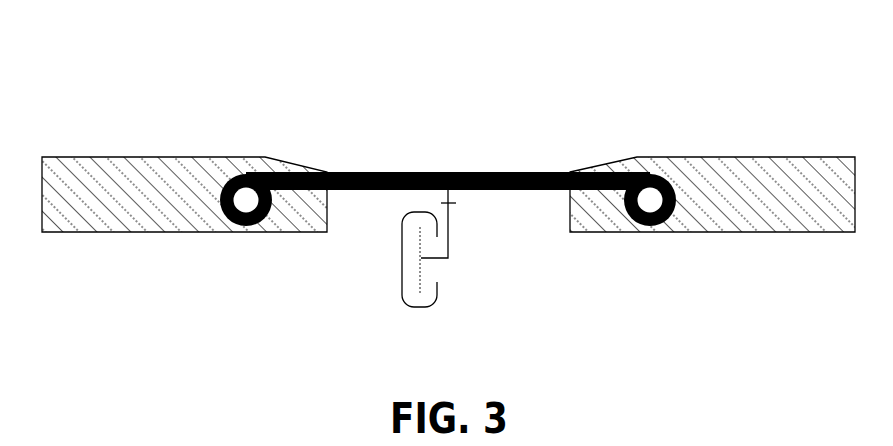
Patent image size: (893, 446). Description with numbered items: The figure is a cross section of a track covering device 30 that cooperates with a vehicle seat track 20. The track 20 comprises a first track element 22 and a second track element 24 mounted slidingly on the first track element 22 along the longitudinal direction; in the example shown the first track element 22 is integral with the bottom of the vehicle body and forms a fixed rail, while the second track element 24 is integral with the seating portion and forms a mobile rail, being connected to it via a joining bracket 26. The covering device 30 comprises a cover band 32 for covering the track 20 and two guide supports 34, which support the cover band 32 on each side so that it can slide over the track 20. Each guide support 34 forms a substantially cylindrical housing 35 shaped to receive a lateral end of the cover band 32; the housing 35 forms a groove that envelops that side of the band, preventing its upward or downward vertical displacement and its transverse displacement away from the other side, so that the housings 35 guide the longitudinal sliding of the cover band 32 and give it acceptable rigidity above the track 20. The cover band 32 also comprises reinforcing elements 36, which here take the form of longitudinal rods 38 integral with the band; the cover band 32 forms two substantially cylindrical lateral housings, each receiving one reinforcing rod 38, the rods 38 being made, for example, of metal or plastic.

The track 20 is at (425, 281).
The first track element 22 is at (400, 255).
The second track element 24 is at (450, 252).
The joining bracket 26 is at (450, 195).
The covering device 30 is at (110, 115).
The cover band 32 is at (513, 172).
The guide support 34 is at (102, 217).
The housing 35 is at (227, 168).
The reinforcing element 36 is at (232, 229).
The longitudinal rod 38 is at (250, 205).